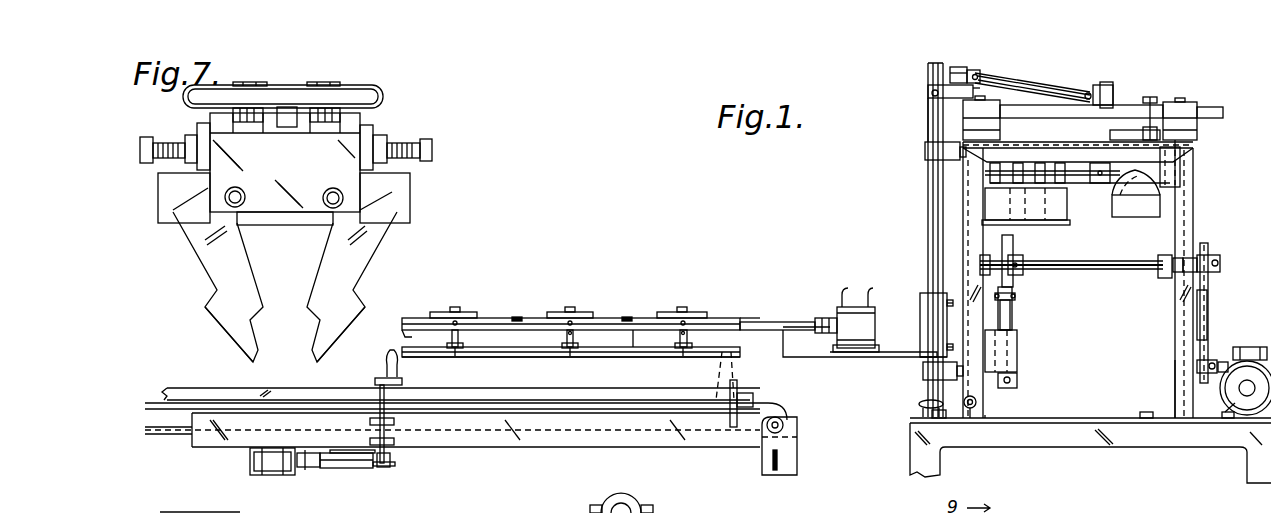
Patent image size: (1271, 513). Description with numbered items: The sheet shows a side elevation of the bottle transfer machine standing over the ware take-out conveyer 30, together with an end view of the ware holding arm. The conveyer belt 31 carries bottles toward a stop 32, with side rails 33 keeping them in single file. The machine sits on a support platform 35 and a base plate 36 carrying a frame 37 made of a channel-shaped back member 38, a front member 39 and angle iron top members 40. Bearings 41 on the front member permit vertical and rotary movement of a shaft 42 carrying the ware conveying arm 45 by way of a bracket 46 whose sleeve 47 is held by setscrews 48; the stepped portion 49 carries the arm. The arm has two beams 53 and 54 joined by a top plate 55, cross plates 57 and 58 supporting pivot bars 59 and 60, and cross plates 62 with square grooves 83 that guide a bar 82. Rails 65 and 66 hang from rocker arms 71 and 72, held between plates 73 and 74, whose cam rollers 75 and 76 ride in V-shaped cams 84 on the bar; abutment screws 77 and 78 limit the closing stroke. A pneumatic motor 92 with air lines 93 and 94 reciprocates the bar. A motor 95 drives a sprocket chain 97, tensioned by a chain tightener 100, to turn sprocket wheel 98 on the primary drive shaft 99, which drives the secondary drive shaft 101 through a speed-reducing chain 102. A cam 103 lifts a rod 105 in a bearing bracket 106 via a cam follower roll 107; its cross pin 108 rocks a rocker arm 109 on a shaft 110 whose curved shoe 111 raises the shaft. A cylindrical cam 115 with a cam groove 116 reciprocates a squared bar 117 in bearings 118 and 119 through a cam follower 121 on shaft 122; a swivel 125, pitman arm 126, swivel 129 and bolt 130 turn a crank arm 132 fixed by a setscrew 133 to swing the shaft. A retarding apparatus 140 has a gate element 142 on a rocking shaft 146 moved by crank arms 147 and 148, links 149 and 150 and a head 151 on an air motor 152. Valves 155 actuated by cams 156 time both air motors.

In FIG. 1, the ware take-out conveyer 30 is at (712, 461).
In FIG. 1, the conveyer belt 31 is at (767, 410).
In FIG. 1, the stop 32 is at (737, 383).
In FIG. 1, the side rails 33 is at (183, 390).
In FIG. 1, the support platform 35 is at (1114, 457).
In FIG. 1, the base plate 36 is at (1067, 417).
In FIG. 1, the support or frame 37 is at (1168, 330).
In FIG. 1, the channel-shaped back member 38 is at (1177, 370).
In FIG. 1, the front member 39 is at (973, 317).
In FIG. 1, the angle iron top members 40 is at (1082, 178).
In FIG. 1, the bearings 41 is at (927, 153).
In FIG. 1, the shaft 42 is at (930, 208).
In FIG. 7, the ware conveying and supporting arm 45 is at (403, 98).
In FIG. 1, the ware conveying and supporting arm 45 is at (643, 312).
In FIG. 1, the bracket 46 is at (920, 320).
In FIG. 1, the sleeve 47 is at (923, 343).
In FIG. 1, the setscrews 48 is at (942, 320).
In FIG. 1, the stepped portion 49 is at (778, 340).
In FIG. 7, the beam 53 is at (208, 122).
In FIG. 7, the beam 54 is at (367, 127).
In FIG. 1, the beam 54 is at (493, 323).
In FIG. 1, the top plate 55 is at (733, 318).
In FIG. 7, the cross plate 57 is at (350, 197).
In FIG. 1, the cross plate 57 is at (410, 332).
In FIG. 1, the cross plate 58 is at (717, 350).
In FIG. 7, the pivot bar 59 is at (223, 190).
In FIG. 7, the pivot bar 60 is at (340, 188).
In FIG. 1, the pivot bar 60 is at (633, 340).
In FIG. 7, the cross plates 62 is at (222, 120).
In FIG. 1, the cross plates 62 is at (517, 320).
In FIG. 7, the rail 65 is at (218, 313).
In FIG. 7, the rail 66 is at (335, 325).
In FIG. 1, the rail 66 is at (593, 355).
In FIG. 7, the rocker arm 71 is at (215, 268).
In FIG. 7, the rocker arm 72 is at (335, 255).
In FIG. 1, the rocker arm 72 is at (460, 347).
In FIG. 1, the plate 73 is at (597, 327).
In FIG. 7, the plate 74 is at (407, 217).
In FIG. 1, the plate 74 is at (453, 337).
In FIG. 7, the cam roller 75 is at (237, 87).
In FIG. 7, the cam roller 76 is at (317, 85).
In FIG. 1, the cam roller 76 is at (455, 310).
In FIG. 7, the abutment screw 77 is at (163, 157).
In FIG. 7, the abutment screw 78 is at (403, 143).
In FIG. 1, the abutment screw 78 is at (572, 323).
In FIG. 7, the bar 82 is at (292, 107).
In FIG. 1, the bar 82 is at (487, 317).
In FIG. 7, the square grooves 83 is at (295, 120).
In FIG. 7, the V-shaped cams 84 is at (372, 97).
In FIG. 1, the V-shaped cams 84 is at (443, 312).
In FIG. 1, the pneumatic motor 92 is at (855, 307).
In FIG. 1, the air line 93 is at (867, 292).
In FIG. 1, the air line 94 is at (842, 295).
In FIG. 1, the motor 95 is at (1250, 402).
In FIG. 1, the sprocket chain 97 is at (1207, 285).
In FIG. 1, the sprocket wheel 98 is at (1207, 255).
In FIG. 1, the primary drive shaft 99 is at (1108, 270).
In FIG. 1, the sprocket chain tightener 100 is at (1213, 322).
In FIG. 1, the secondary drive shaft 101 is at (1068, 195).
In FIG. 1, the speed-reducing sprocket chain 102 is at (1170, 230).
In FIG. 1, the cam 103 is at (1013, 242).
In FIG. 1, the rod 105 is at (1017, 323).
In FIG. 1, the bearing bracket 106 is at (1017, 355).
In FIG. 1, the cam follower roll 107 is at (1013, 297).
In FIG. 1, the cross pin 108 is at (1017, 388).
In FIG. 1, the rocker arm 109 is at (993, 400).
In FIG. 1, the shaft 110 is at (967, 410).
In FIG. 1, the curved shoe 111 is at (922, 403).
In FIG. 1, the cylindrical cam 115 is at (1147, 212).
In FIG. 1, the cam groove 116 is at (1123, 217).
In FIG. 1, the squared bar 117 is at (1212, 110).
In FIG. 1, the bearing 118 is at (1193, 105).
In FIG. 1, the bearing 119 is at (993, 102).
In FIG. 1, the cam follower 121 is at (1143, 130).
In FIG. 1, the shaft 122 is at (1150, 98).
In FIG. 1, the clevice-like swivel 125 is at (1115, 87).
In FIG. 1, the pitman arm 126 is at (1067, 85).
In FIG. 1, the swivel 129 is at (977, 73).
In FIG. 1, the bolt 130 is at (960, 67).
In FIG. 1, the crank arm 132 is at (928, 90).
In FIG. 1, the setscrew 133 is at (928, 108).
In FIG. 1, the withholding or retarding apparatus 140 is at (417, 464).
In FIG. 1, the gate element 142 is at (402, 382).
In FIG. 1, the vertical rocking shaft 146 is at (377, 397).
In FIG. 1, the crank arm 147 is at (393, 467).
In FIG. 1, the crank arm 148 is at (383, 463).
In FIG. 1, the link 149 is at (337, 470).
In FIG. 1, the link 150 is at (337, 453).
In FIG. 1, the head 151 is at (312, 467).
In FIG. 1, the air motor 152 is at (250, 462).
In FIG. 1, the valves 155 is at (983, 198).
In FIG. 1, the cams 156 is at (1057, 163).